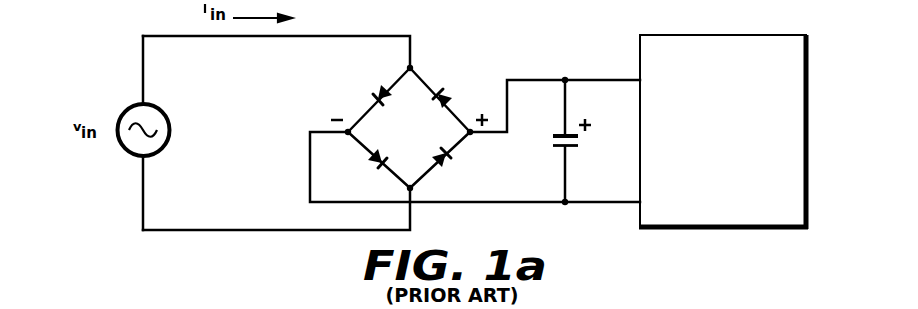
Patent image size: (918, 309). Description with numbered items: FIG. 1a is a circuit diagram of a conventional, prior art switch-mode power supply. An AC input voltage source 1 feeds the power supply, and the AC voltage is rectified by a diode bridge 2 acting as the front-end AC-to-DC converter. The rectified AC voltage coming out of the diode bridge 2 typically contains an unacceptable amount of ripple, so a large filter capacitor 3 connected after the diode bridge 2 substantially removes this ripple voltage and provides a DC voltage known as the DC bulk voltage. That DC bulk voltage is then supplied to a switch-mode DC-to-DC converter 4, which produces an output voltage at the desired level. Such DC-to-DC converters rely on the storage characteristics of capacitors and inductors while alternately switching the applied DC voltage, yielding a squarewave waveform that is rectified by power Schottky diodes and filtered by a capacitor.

The AC input voltage source 1 is at (124, 112).
The diode bridge 2 is at (398, 139).
The filter capacitor 3 is at (572, 146).
The DC-to-DC converter 4 is at (764, 13).